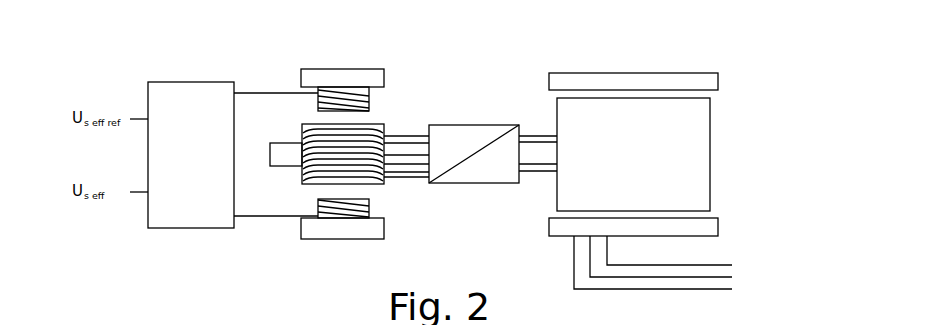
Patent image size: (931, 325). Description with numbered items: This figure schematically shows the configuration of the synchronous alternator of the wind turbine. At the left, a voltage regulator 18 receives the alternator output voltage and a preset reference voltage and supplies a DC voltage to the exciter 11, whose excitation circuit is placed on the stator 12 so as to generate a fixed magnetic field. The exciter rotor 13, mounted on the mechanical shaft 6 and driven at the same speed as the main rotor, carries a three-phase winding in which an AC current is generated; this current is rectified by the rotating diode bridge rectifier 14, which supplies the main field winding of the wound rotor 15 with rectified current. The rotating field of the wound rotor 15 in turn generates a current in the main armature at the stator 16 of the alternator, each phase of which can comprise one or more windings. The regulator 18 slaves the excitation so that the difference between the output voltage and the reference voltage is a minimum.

The mechanical shaft 6 is at (290, 153).
The exciter 11 is at (358, 119).
The stator 12 is at (373, 80).
The exciter rotor 13 is at (376, 181).
The rectifier bridge 14 is at (459, 174).
The wound rotor 15 is at (697, 143).
The stator 16 is at (652, 78).
The voltage regulator 18 is at (224, 155).